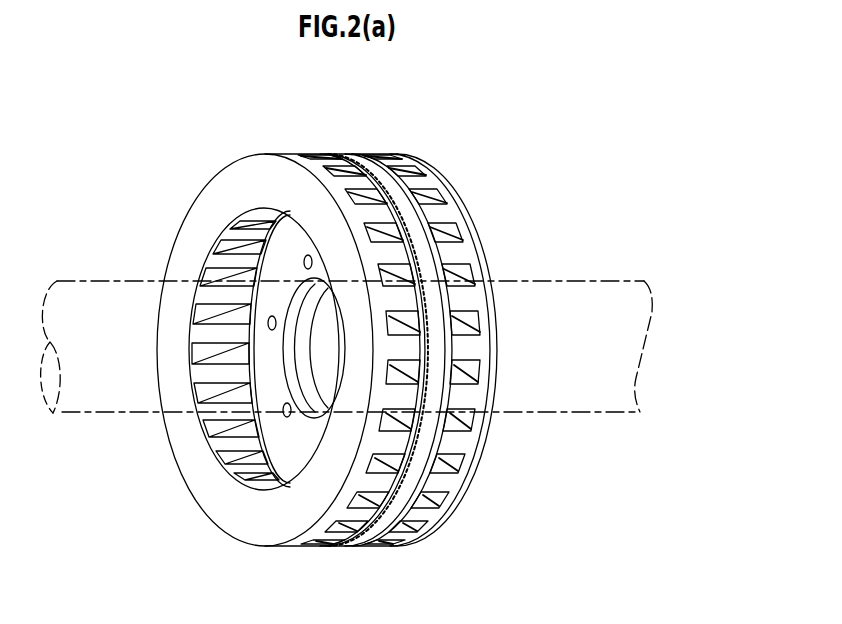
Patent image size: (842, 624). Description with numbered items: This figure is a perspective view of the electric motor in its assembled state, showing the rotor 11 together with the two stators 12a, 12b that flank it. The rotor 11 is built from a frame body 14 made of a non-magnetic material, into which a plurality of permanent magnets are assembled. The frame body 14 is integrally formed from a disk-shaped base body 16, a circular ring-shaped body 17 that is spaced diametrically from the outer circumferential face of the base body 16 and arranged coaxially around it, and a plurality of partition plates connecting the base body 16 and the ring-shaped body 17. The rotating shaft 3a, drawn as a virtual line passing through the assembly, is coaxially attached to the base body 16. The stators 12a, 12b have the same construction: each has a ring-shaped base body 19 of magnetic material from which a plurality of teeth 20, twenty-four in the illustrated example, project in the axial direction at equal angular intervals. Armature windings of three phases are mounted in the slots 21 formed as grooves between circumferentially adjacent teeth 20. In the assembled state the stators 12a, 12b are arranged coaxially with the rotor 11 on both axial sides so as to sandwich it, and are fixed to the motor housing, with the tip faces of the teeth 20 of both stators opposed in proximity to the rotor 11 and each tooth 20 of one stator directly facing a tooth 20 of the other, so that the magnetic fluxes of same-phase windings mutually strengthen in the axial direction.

The rotating shaft 3a is at (82, 415).
The rotor 11 is at (364, 170).
The stator 12a is at (240, 154).
The stator 12b is at (440, 170).
The frame body 14 is at (365, 553).
The base body 16 is at (293, 447).
The ring-shaped body 17 is at (399, 185).
The base body 19 is at (472, 441).
The teeth 20 is at (323, 160).
The blade 21 is at (338, 141).